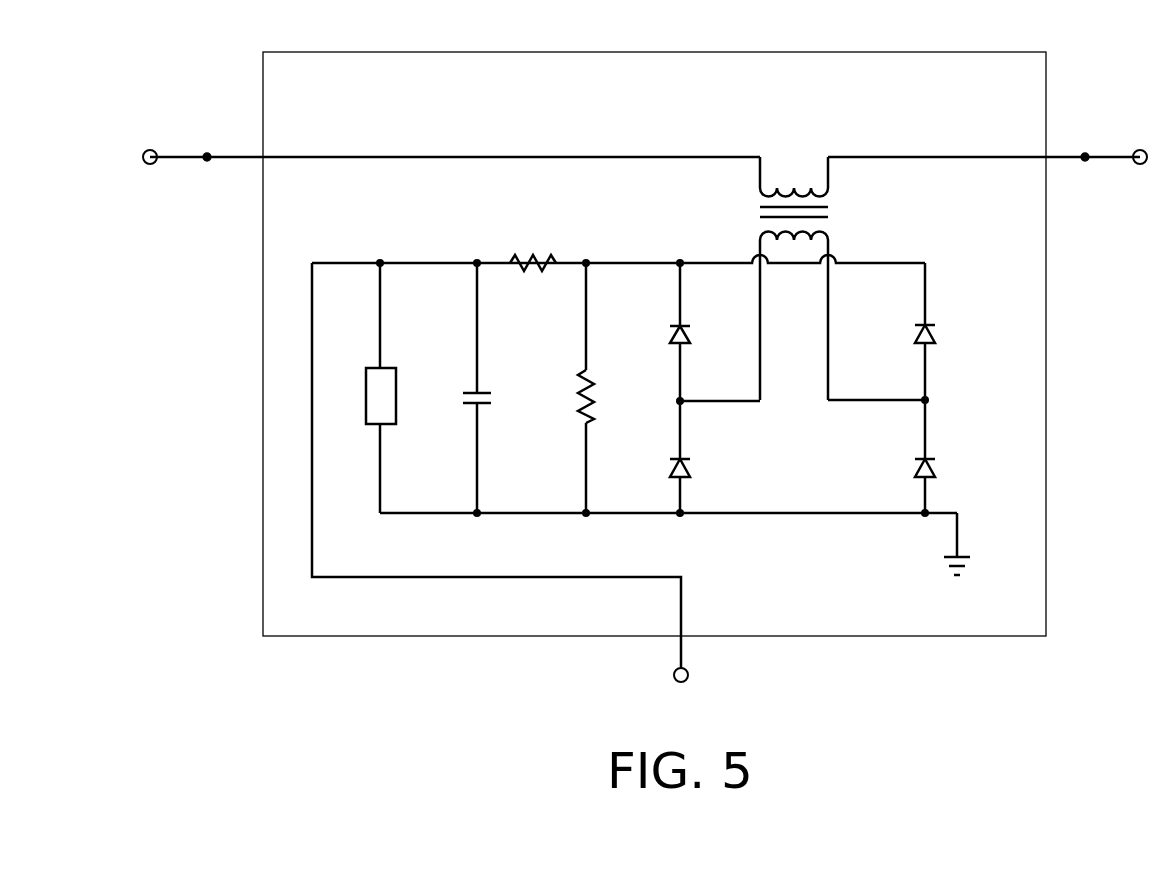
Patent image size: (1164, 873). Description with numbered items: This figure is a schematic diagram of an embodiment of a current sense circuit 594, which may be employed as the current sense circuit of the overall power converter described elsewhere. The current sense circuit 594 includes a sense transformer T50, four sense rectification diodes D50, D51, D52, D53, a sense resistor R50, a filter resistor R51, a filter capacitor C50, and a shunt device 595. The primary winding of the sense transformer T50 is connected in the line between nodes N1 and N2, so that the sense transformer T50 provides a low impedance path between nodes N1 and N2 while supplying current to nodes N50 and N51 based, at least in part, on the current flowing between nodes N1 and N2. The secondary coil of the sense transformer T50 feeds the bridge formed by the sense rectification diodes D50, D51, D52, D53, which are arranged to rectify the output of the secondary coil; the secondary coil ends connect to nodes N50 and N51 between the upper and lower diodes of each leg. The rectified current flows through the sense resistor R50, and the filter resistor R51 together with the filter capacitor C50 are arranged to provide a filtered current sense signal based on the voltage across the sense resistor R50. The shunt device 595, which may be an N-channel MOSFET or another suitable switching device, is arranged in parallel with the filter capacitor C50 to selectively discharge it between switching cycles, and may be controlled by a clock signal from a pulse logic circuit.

The current sense circuit 594 is at (768, 52).
The shunt device 595 is at (396, 368).
The node N1 is at (207, 157).
The node N2 is at (1085, 157).
The sense transformer T50 is at (794, 267).
The filter capacitor C50 is at (499, 400).
The sense resistor R50 is at (610, 396).
The filter resistor R51 is at (533, 249).
The sense rectification diode D50 is at (704, 336).
The sense rectification diode D51 is at (704, 470).
The sense rectification diode D52 is at (948, 336).
The sense rectification diode D53 is at (948, 470).
The node N50 is at (680, 401).
The node N51 is at (925, 400).